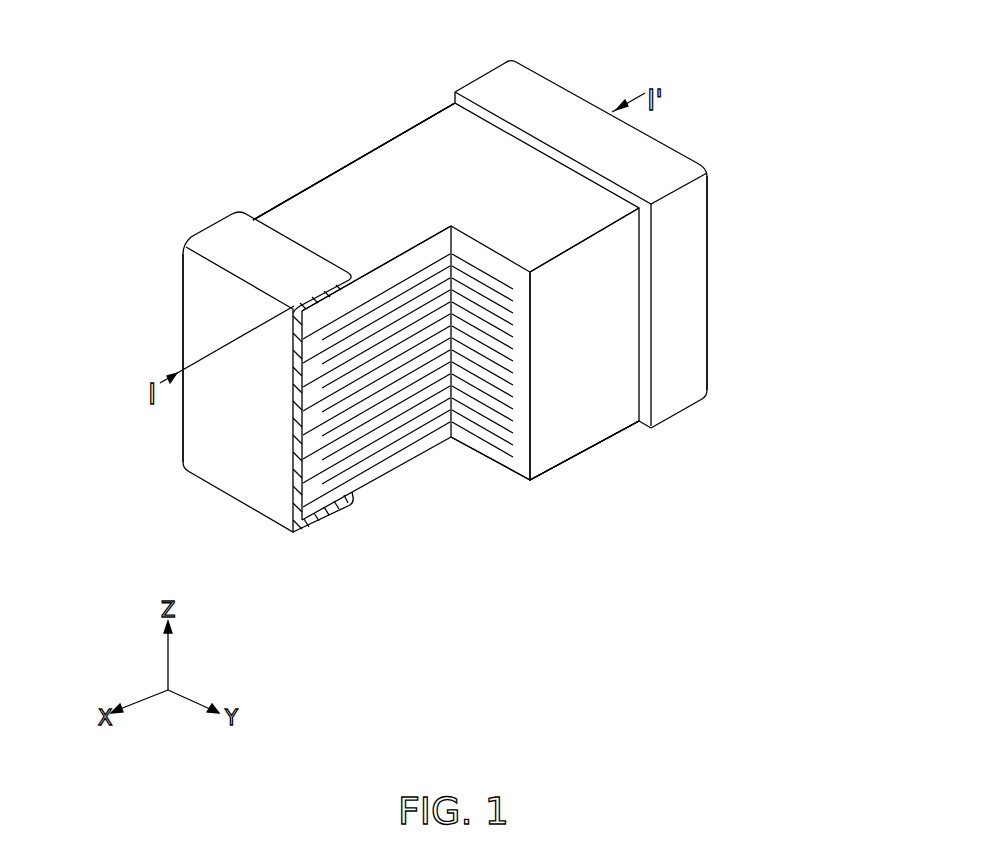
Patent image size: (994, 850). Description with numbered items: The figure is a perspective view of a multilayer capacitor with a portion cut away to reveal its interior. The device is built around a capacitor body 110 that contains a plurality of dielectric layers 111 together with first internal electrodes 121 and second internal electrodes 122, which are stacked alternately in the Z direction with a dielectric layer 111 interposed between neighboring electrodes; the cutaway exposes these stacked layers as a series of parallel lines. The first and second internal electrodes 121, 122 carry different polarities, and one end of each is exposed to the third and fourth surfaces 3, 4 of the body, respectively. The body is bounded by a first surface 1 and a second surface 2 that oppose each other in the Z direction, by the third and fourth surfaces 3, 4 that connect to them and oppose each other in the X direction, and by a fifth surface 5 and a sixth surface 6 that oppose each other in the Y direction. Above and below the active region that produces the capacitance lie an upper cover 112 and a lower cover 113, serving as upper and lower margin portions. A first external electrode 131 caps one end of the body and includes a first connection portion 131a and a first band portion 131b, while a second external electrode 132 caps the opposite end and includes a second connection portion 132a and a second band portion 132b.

The first surface 1 is at (567, 460).
The second surface 2 is at (392, 158).
The third surface 3 is at (214, 468).
The fourth surface 4 is at (569, 82).
The fifth surface 5 is at (615, 416).
The sixth surface 6 is at (424, 112).
The capacitor body 110 is at (343, 183).
The dielectric layer 111 is at (408, 407).
The upper cover 112 is at (362, 296).
The lower cover 113 is at (518, 462).
The first internal electrode 121 is at (367, 438).
The second internal electrode 122 is at (438, 414).
The first external electrode 131 is at (268, 425).
The first connection portion 131a is at (250, 482).
The first band portion 131b is at (319, 522).
The second external electrode 132 is at (652, 268).
The second connection portion 132a is at (706, 376).
The second band portion 132b is at (689, 414).